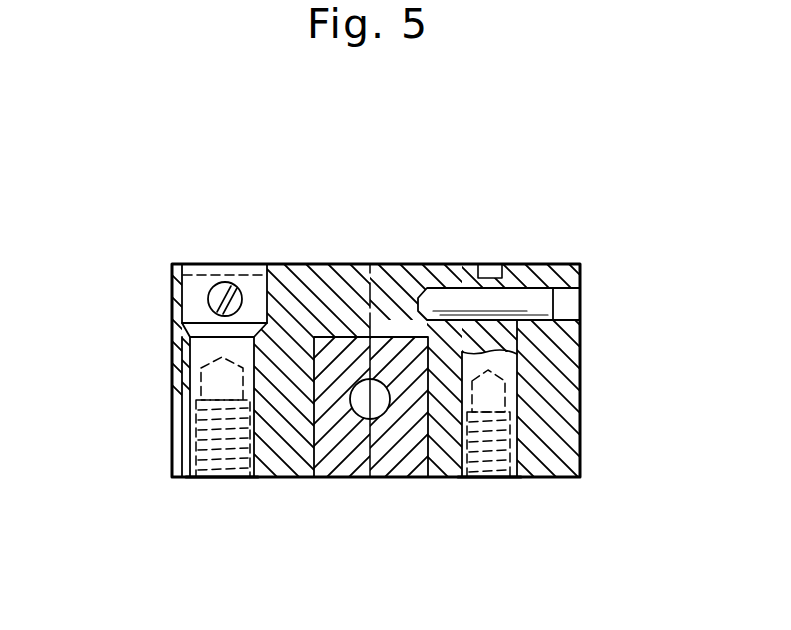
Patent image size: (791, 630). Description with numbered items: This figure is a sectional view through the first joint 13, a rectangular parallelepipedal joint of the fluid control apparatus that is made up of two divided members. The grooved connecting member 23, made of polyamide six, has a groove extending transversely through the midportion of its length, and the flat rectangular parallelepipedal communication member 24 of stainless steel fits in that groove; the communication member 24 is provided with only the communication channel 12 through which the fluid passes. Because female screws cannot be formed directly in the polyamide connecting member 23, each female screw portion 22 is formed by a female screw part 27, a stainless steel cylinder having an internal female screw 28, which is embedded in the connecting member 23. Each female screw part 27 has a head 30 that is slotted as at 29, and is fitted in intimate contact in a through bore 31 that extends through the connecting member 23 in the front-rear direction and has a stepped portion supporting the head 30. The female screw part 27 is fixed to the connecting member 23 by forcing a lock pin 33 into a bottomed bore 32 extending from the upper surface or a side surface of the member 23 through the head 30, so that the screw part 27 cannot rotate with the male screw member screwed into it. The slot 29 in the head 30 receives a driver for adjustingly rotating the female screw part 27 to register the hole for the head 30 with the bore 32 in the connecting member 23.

The communication channel 12 is at (367, 418).
The first joint 13 is at (633, 260).
The female screw portions 22 is at (244, 475).
The connecting member 23 is at (568, 437).
The communication member 24 is at (399, 452).
The female screw part 27 is at (178, 455).
The female screw 28 is at (210, 477).
The slot 29 is at (242, 270).
The head 30 is at (195, 283).
The through bore 31 is at (190, 372).
The bore 32 is at (572, 308).
The lock pin 33 is at (223, 284).